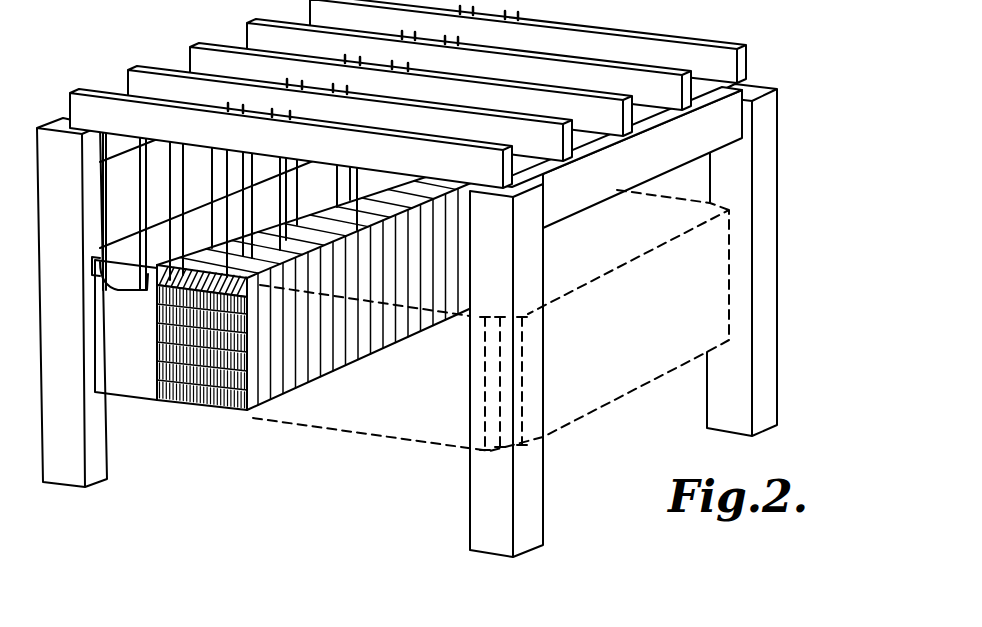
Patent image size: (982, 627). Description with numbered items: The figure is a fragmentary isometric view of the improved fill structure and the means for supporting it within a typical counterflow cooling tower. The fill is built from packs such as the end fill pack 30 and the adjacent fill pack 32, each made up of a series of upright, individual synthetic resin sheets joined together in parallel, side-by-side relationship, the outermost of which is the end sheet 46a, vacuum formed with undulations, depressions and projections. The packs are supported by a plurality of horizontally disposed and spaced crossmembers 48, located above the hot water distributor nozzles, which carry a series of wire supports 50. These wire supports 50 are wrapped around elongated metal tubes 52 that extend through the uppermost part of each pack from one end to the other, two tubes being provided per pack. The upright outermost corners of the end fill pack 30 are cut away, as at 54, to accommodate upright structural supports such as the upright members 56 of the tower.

The fill pack 30 is at (133, 398).
The fill pack 32 is at (197, 400).
The end sheet 46a is at (230, 413).
The crossmembers 48 is at (85, 107).
The wire supports 50 is at (167, 186).
The metal tubes 52 is at (146, 285).
The cut away corner 54 is at (97, 257).
The upright members 56 is at (73, 480).